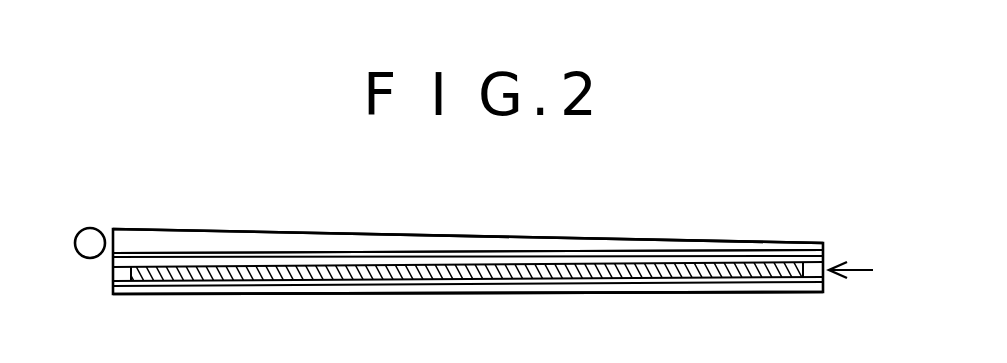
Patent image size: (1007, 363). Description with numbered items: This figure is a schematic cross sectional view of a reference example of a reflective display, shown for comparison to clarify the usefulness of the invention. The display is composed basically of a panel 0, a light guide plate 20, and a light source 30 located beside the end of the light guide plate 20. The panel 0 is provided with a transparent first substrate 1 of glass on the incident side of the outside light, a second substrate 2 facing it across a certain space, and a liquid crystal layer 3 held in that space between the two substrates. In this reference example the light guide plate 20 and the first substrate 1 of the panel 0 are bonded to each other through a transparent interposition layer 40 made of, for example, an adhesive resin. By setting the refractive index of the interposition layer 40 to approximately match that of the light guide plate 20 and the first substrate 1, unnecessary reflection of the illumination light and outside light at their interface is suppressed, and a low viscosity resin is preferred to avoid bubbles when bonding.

The first substrate 1 is at (823, 253).
The second substrate 2 is at (755, 289).
The liquid crystal layer 3 is at (432, 279).
The light guide plate 20 is at (353, 235).
The light source 30 is at (95, 228).
The interposition layer 40 is at (496, 254).
The panel 0 is at (862, 270).